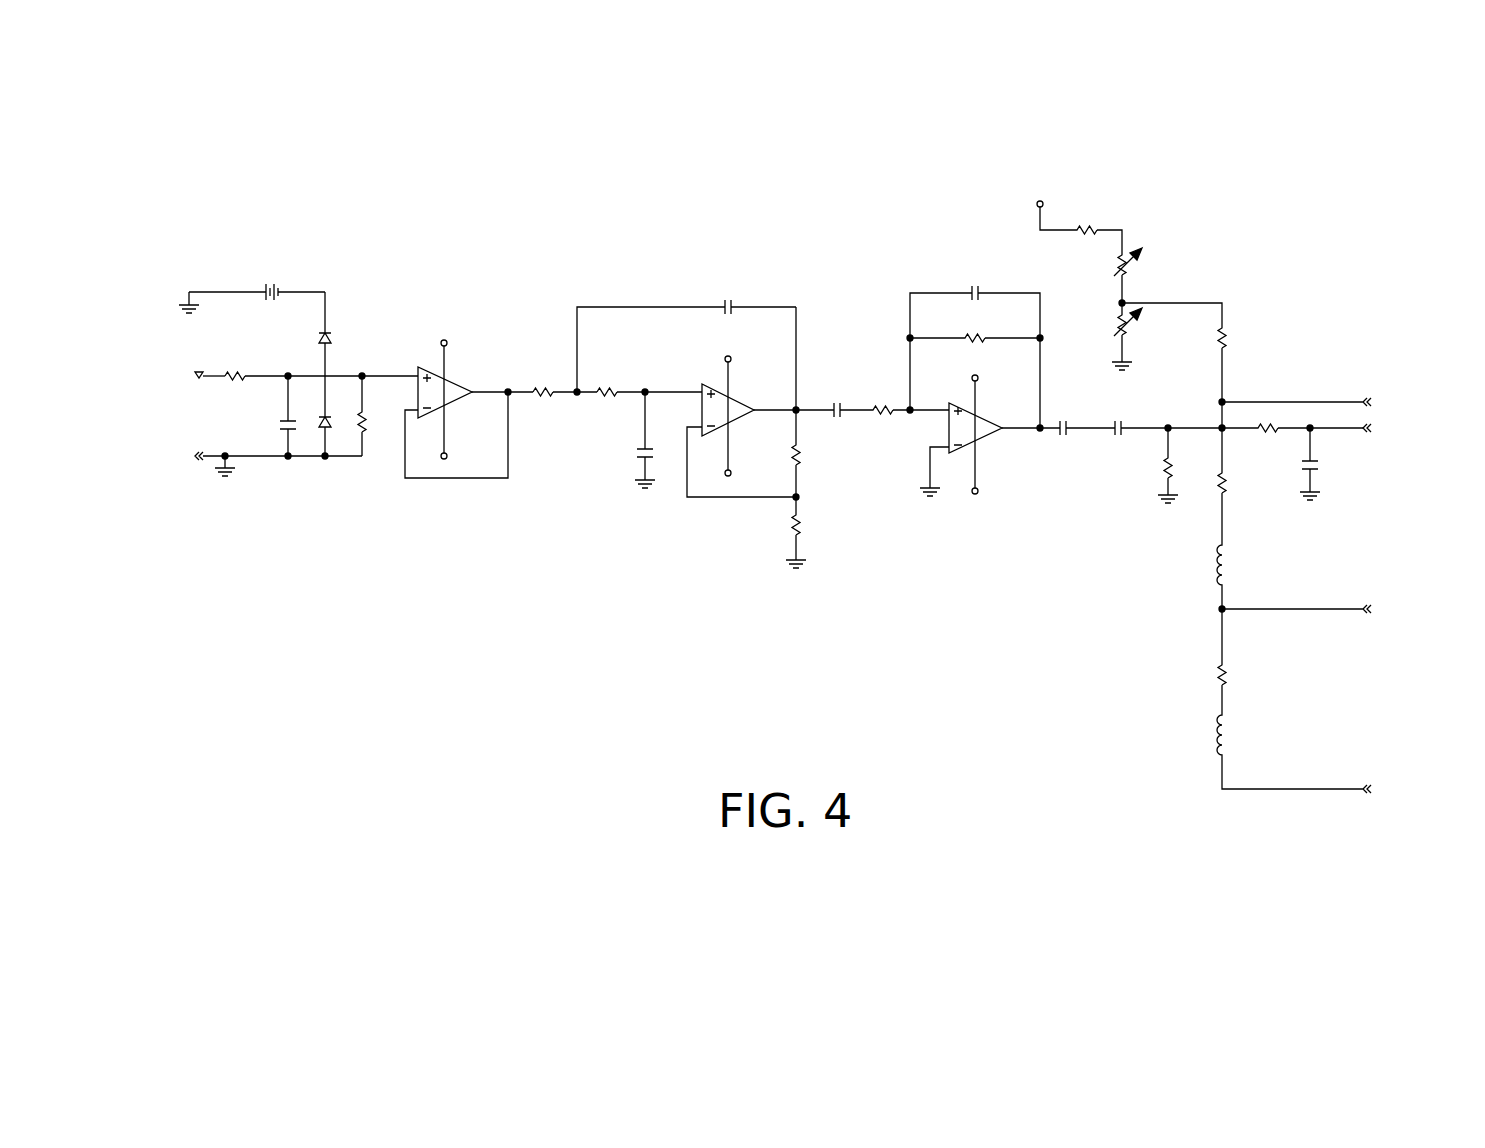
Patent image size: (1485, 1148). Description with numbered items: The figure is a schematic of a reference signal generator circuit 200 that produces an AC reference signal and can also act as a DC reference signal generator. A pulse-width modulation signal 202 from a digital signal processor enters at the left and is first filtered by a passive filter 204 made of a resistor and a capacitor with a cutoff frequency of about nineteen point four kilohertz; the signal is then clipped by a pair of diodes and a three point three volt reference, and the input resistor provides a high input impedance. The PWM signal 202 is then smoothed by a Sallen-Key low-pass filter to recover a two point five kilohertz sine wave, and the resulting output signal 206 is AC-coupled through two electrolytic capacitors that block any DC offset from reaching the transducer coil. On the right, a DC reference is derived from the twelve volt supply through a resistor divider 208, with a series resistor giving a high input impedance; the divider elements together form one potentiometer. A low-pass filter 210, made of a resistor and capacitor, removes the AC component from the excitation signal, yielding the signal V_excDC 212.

The reference signal generator circuit 200 is at (403, 560).
The pulse-width modulation (PWM) signal 202 is at (172, 392).
The passive filter 204 is at (229, 424).
The output signal 206 is at (1422, 384).
The resistor divider 208 is at (1180, 287).
The low-pass filter 210 is at (1291, 437).
The signal V_excDC 212 is at (1423, 442).